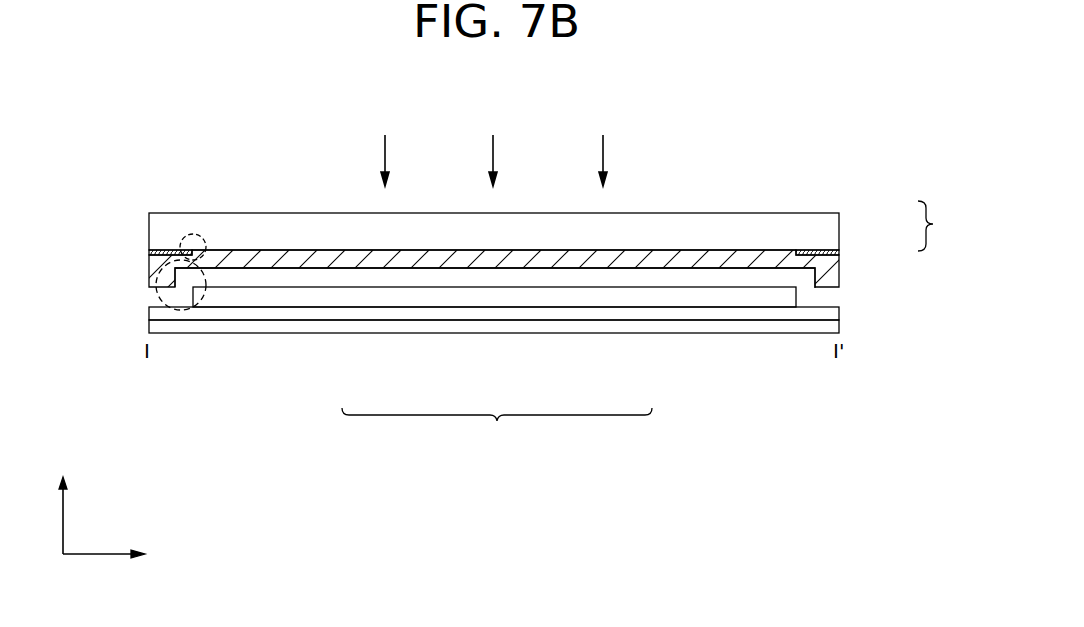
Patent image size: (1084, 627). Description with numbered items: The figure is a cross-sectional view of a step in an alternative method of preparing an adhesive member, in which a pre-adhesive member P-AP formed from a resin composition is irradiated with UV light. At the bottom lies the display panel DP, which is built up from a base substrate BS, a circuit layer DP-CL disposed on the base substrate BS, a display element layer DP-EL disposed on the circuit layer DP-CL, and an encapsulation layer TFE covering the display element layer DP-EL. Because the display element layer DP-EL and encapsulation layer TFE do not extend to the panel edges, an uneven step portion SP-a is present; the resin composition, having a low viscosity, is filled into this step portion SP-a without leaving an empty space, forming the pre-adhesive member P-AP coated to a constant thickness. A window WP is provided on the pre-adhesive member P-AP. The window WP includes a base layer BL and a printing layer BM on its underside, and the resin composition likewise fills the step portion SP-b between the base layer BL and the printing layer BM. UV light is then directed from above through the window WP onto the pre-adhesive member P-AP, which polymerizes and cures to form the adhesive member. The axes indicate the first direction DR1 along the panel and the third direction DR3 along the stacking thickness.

The base layer BL is at (832, 227).
The printing layer BM is at (838, 252).
The window WP is at (940, 226).
The pre-adhesive member P-AP is at (838, 268).
The encapsulation layer TFE is at (628, 278).
The display element layer DP-EL is at (543, 300).
The circuit layer DP-CL is at (437, 314).
The base substrate BS is at (357, 326).
The display panel DP is at (497, 429).
The step portion SP-a is at (155, 288).
The step portion SP-b is at (193, 247).
The UV light UV is at (494, 145).
The first direction DR1 is at (122, 555).
The third direction DR3 is at (64, 502).